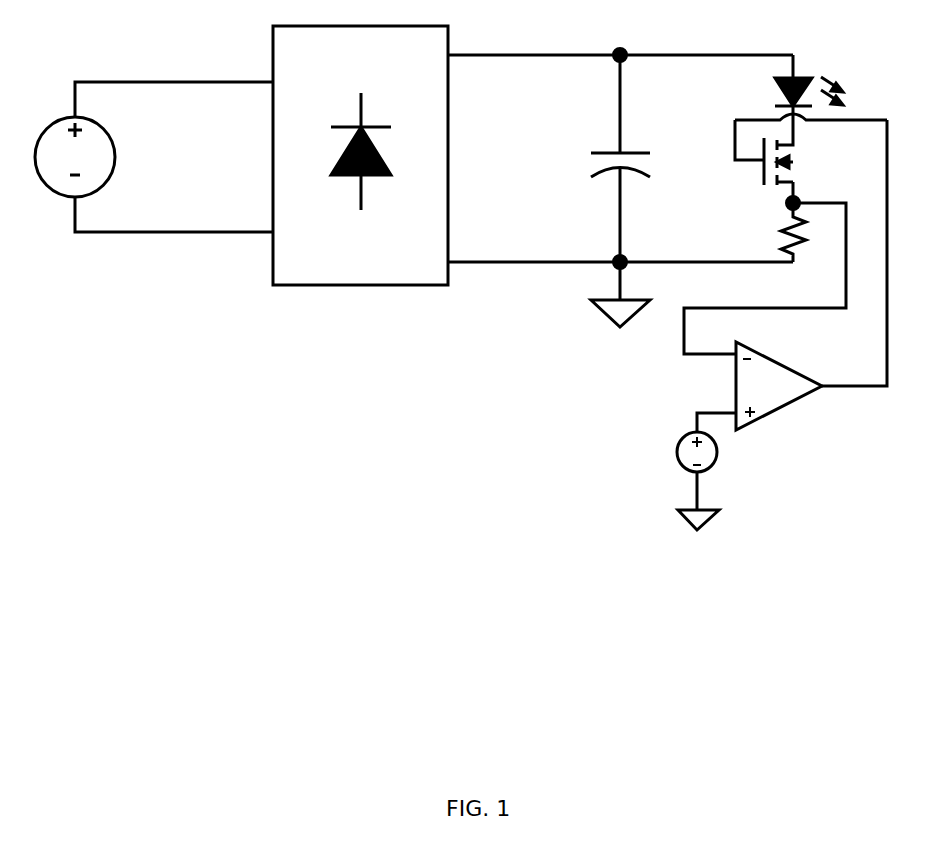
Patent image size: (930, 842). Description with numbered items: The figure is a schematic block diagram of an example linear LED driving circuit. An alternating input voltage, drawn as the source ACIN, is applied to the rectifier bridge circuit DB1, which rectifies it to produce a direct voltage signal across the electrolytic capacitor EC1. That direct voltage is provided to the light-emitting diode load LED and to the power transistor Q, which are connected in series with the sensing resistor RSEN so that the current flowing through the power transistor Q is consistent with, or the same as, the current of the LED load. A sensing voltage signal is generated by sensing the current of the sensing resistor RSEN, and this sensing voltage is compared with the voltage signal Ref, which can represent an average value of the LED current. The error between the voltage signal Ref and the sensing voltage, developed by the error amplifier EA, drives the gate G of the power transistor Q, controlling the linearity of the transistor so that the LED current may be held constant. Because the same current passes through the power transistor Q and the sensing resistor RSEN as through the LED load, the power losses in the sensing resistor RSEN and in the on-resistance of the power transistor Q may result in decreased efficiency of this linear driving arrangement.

The AC input voltage source ACIN is at (154, 157).
The rectifier bridge circuit DB1 is at (360, 155).
The electrolytic capacitor EC1 is at (638, 188).
The light-emitting diode load LED is at (781, 87).
The power transistor Q is at (811, 158).
The gate terminal of transistor G is at (739, 146).
The sensing resistor RSEN is at (765, 276).
The error amplifier EA is at (811, 275).
The voltage signal Ref is at (718, 471).